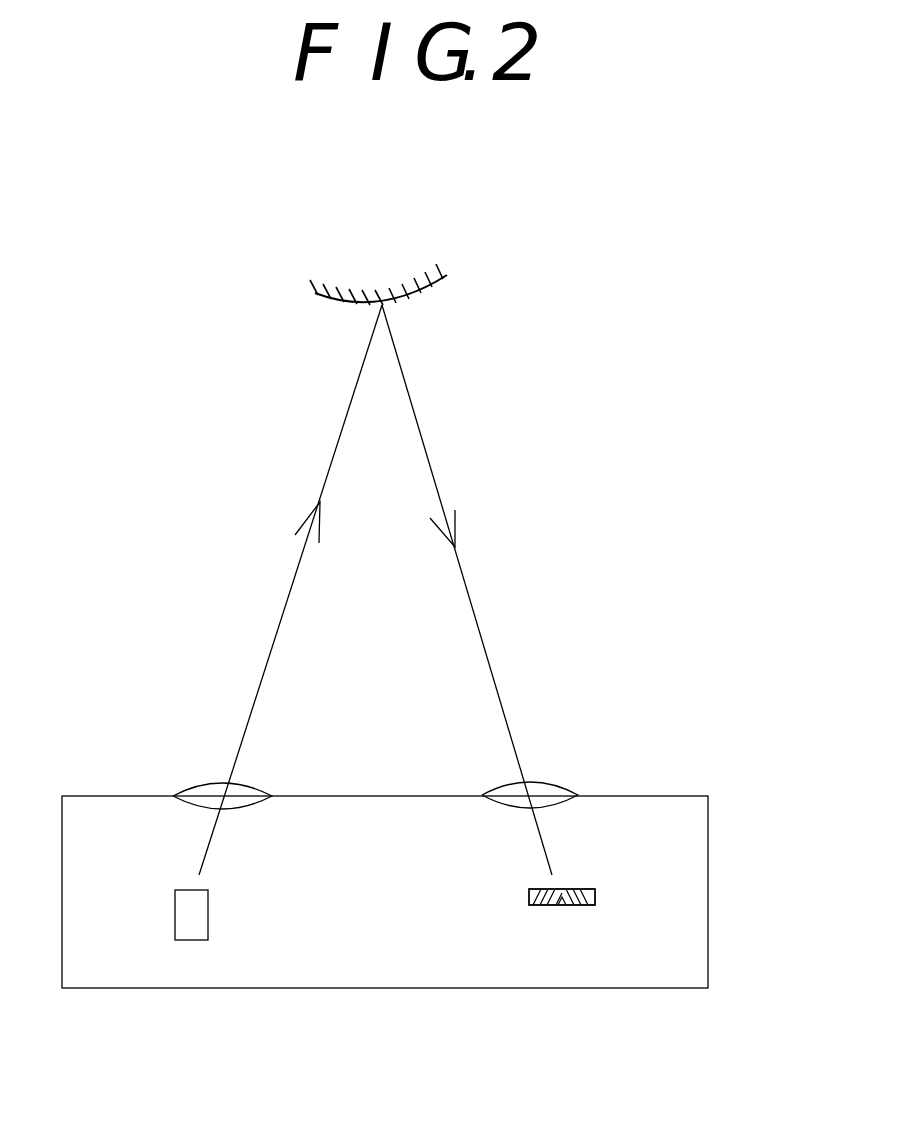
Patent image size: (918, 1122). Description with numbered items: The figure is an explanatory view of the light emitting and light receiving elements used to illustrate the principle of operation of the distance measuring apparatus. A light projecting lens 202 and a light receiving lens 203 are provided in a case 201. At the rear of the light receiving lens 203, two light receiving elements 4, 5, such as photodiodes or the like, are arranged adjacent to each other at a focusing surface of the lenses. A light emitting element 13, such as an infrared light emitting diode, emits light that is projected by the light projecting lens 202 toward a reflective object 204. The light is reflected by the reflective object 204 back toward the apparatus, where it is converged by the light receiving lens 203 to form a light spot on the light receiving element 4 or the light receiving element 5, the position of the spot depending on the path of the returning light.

The case 201 is at (708, 822).
The light projecting lens 202 is at (188, 788).
The light receiving lens 203 is at (558, 787).
The reflective object 204 is at (405, 299).
The light emitting element 13 is at (190, 940).
The light receiving element 4 is at (578, 907).
The light receiving element 5 is at (541, 907).